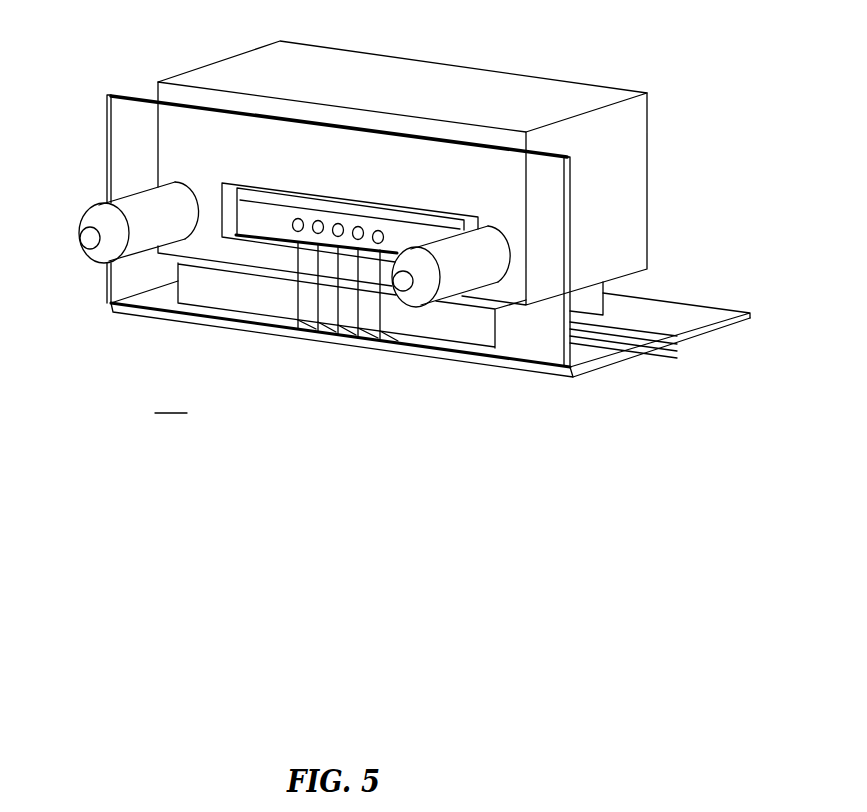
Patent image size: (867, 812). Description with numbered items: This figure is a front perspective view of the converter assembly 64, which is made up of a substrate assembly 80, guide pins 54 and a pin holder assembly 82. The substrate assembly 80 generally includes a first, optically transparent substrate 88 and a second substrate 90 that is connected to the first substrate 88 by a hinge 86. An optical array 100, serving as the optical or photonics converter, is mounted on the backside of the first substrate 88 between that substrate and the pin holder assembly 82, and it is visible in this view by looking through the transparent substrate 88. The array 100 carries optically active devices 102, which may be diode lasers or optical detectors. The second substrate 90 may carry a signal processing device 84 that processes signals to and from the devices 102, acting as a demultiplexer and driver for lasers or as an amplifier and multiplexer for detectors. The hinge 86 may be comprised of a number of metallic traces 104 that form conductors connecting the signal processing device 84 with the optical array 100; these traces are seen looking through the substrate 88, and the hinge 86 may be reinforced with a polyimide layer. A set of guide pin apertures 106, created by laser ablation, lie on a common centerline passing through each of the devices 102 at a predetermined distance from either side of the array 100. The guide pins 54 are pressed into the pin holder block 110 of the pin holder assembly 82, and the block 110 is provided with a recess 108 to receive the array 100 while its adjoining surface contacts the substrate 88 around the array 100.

The substrate assembly 80 is at (86, 167).
The pin holder assembly 82 is at (210, 47).
The signal processing device 84 is at (603, 294).
The hinge 86 is at (551, 384).
The first substrate 88 is at (104, 115).
The second substrate 90 is at (723, 331).
The optical array 100 is at (432, 224).
The optically active devices 102 is at (283, 218).
The metallic traces 104 is at (380, 314).
The guide pin apertures 106 is at (180, 184).
The recess 108 is at (330, 198).
The pin holder block 110 is at (538, 78).
The guide pins 54 is at (80, 248).
The converter assembly 64 is at (171, 399).